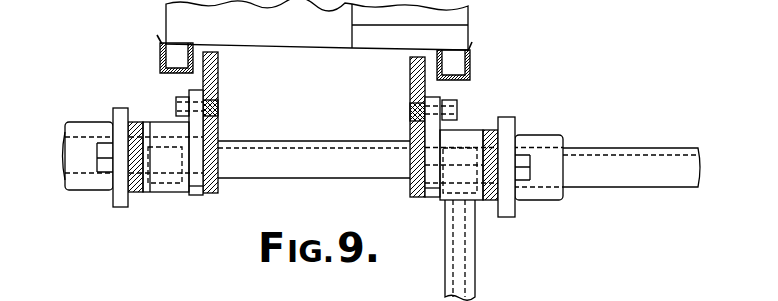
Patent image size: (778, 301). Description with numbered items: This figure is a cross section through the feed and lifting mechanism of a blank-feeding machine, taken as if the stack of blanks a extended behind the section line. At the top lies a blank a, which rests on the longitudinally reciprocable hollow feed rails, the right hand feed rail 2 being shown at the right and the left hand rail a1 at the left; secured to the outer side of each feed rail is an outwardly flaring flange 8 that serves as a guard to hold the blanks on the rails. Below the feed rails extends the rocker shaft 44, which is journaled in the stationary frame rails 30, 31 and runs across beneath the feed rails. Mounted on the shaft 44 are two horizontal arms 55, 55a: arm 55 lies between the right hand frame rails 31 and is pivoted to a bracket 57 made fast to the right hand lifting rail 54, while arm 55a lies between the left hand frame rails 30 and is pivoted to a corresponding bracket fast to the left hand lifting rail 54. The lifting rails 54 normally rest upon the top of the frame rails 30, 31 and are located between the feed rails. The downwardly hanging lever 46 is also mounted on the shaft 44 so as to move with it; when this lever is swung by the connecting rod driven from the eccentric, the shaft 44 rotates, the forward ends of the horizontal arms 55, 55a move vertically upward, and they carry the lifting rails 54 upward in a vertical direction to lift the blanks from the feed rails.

The blank a is at (320, 40).
The frame channel member a1 is at (163, 70).
The feed rail 2 is at (471, 79).
The outwardly flaring flange 8 is at (471, 48).
The lifting rail 54 is at (417, 74).
The bracket 57 is at (441, 113).
The rocker shaft 44 is at (322, 168).
The frame rail 30 is at (137, 192).
The frame rail 31 is at (503, 135).
The horizontal arm 55 is at (460, 175).
The horizontal arm 55a is at (172, 188).
The lever 46 is at (469, 258).